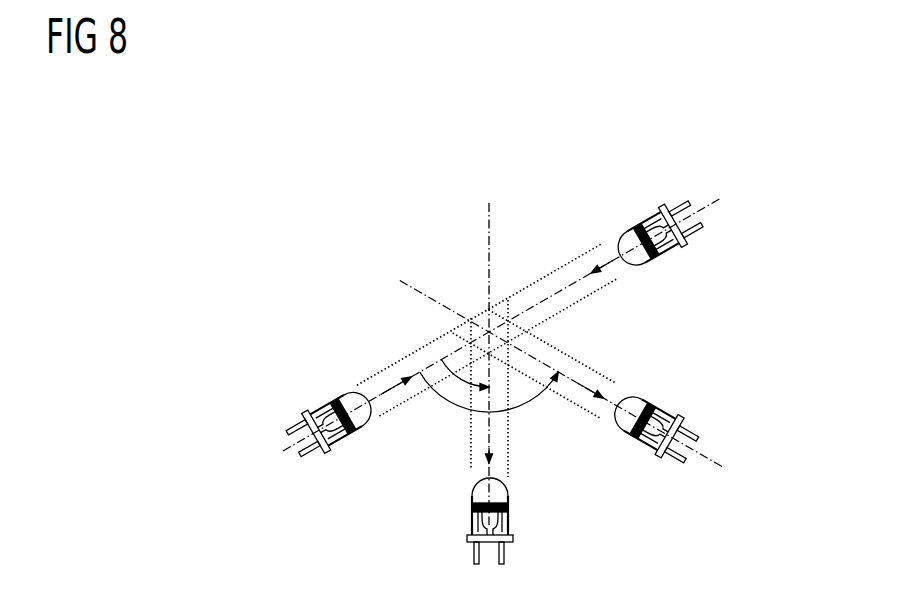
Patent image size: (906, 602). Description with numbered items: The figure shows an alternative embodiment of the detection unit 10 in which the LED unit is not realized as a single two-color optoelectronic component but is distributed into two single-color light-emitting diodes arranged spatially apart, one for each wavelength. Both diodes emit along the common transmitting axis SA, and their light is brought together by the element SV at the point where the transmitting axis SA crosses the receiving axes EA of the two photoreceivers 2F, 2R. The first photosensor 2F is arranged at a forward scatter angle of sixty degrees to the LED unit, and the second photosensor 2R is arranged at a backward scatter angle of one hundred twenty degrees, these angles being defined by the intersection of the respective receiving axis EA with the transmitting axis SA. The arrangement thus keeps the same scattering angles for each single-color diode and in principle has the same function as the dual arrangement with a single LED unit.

The detection unit 10 is at (669, 154).
The transmitting axis SA is at (562, 288).
The beam combiner / splitter SV is at (483, 322).
The receiving axis EA is at (488, 249).
The first photosensor 2F is at (475, 494).
The second photosensor 2R is at (628, 425).